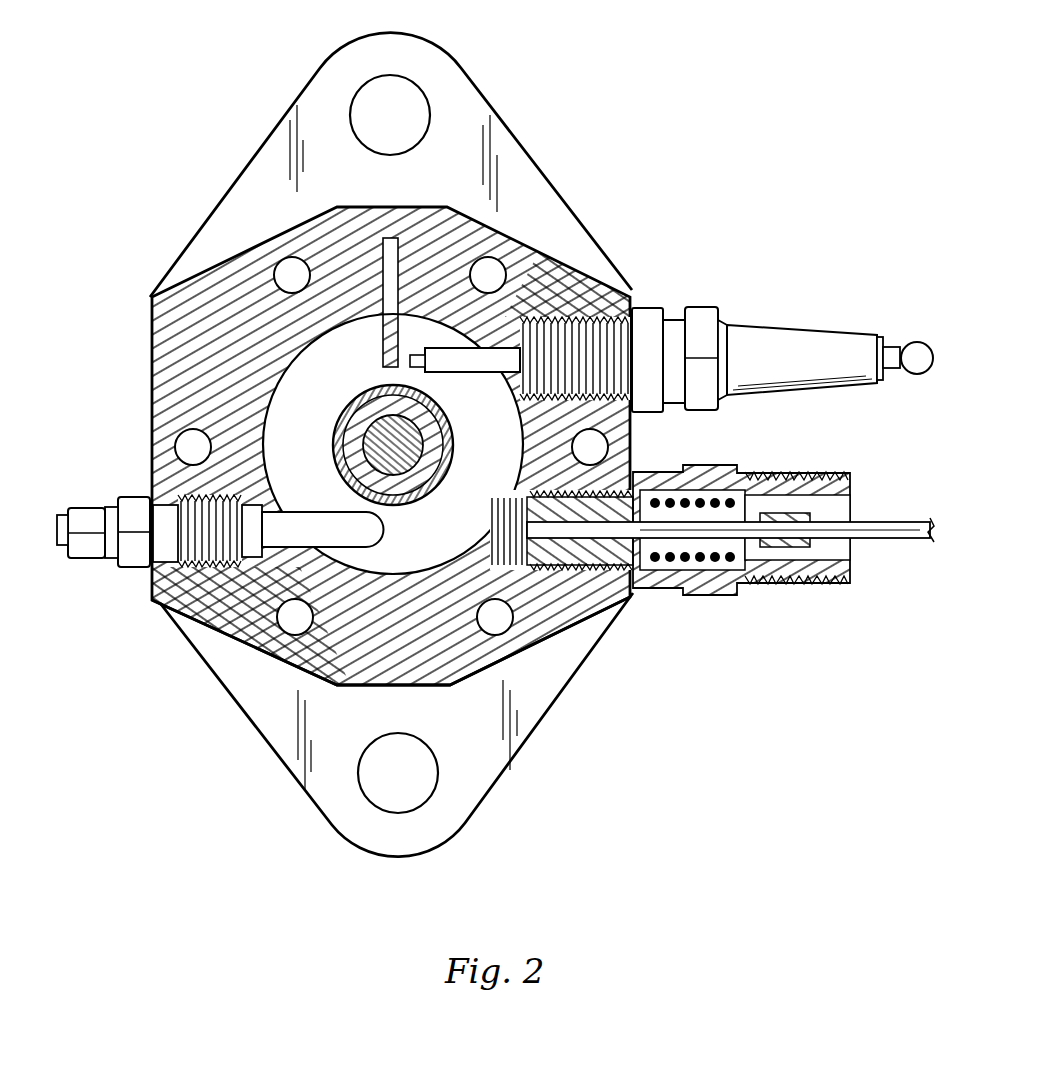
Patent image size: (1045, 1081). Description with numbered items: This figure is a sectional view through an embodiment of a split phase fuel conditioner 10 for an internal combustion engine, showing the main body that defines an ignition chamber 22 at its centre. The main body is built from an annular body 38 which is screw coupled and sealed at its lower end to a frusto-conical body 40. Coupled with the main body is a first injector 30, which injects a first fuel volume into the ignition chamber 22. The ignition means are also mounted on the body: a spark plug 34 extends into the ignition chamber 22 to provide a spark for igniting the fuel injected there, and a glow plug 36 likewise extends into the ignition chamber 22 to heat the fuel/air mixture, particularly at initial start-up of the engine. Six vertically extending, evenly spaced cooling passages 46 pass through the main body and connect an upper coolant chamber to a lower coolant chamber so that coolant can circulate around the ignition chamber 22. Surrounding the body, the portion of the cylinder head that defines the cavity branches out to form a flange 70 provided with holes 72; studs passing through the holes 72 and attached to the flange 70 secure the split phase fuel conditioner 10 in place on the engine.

The split phase fuel conditioner 10 is at (644, 189).
The ignition chamber 22 is at (313, 387).
The first injector 30 is at (712, 592).
The spark plug 34 is at (768, 335).
The glow plug 36 is at (160, 605).
The annular body 38 is at (573, 282).
The frusto-conical body 40 is at (500, 627).
The cooling passages 46 is at (288, 267).
The flange 70 is at (455, 812).
The holes 72 is at (413, 100).